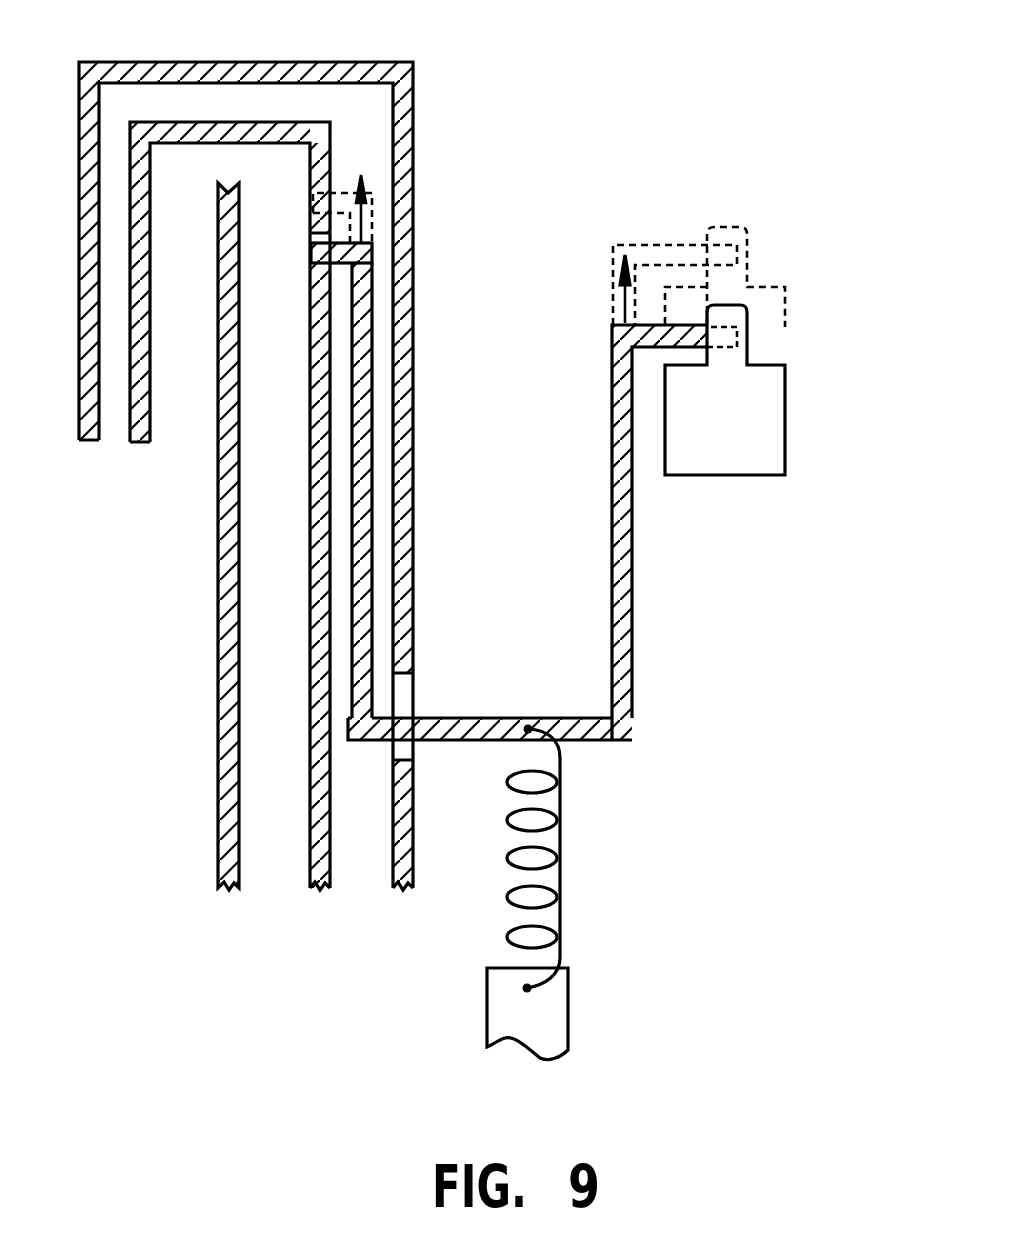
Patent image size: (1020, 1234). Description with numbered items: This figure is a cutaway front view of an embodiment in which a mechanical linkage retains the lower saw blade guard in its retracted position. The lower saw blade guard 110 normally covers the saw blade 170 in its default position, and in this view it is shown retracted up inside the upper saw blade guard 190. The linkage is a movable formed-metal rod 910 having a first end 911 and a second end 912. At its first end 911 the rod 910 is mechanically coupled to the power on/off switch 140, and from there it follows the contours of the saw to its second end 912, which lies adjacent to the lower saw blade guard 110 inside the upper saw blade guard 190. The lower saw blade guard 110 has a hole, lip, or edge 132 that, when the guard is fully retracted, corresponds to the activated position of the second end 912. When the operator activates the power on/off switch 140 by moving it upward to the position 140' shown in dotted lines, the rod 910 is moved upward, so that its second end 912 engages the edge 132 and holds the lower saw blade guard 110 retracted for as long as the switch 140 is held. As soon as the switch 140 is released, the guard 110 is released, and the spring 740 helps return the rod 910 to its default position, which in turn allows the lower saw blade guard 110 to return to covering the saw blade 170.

The upper saw blade guard 190 is at (194, 61).
The lower saw blade guard 110 is at (138, 442).
The saw blade 170 is at (217, 689).
The edge 132 is at (313, 273).
The second end 912 is at (372, 257).
The rod 910 is at (465, 718).
The first end 911 is at (613, 333).
The power on/off switch 140 is at (771, 390).
The activated position of power on/off switch 140' is at (753, 287).
The spring 740 is at (560, 873).